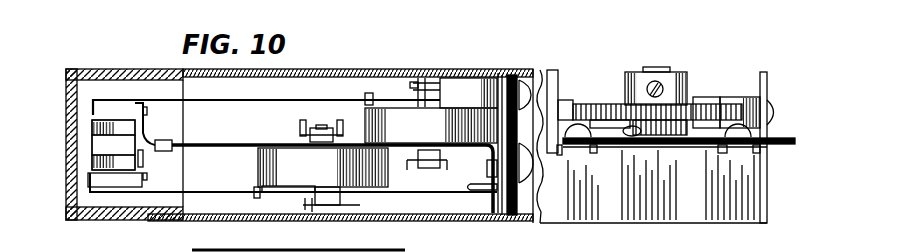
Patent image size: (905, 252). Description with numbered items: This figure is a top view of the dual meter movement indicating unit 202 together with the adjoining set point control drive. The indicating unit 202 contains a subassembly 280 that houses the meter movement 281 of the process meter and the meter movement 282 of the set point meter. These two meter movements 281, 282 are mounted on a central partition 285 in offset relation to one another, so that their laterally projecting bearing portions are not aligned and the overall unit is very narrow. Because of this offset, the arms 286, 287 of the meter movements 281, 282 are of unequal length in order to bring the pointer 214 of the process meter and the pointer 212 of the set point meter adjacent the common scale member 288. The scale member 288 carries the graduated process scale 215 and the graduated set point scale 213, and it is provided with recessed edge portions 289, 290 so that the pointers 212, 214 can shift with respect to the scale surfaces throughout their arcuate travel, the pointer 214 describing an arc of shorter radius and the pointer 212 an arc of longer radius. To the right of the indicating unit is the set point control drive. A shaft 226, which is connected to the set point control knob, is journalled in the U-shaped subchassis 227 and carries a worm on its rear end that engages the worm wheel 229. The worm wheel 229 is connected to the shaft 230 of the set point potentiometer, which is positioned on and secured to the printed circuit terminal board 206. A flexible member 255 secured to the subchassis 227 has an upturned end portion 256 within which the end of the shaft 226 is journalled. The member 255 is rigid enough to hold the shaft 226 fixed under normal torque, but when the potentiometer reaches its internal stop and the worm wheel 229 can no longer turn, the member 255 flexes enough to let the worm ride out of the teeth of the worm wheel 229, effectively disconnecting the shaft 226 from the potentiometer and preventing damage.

The indicating subassembly 202 is at (78, 66).
The subassembly 280 is at (322, 68).
The recessed edge portion 290 is at (86, 114).
The pointer 212 is at (92, 106).
The set point scale 213 is at (92, 125).
The scale member 288 is at (92, 140).
The process scale 215 is at (92, 162).
The pointer 214 is at (86, 178).
The recessed edge portion 289 is at (108, 180).
The arm 287 is at (262, 95).
The central partition 285 is at (256, 137).
The arm 286 is at (236, 183).
The meter movement 281 is at (360, 186).
The meter movement 282 is at (397, 114).
The shaft 226 is at (567, 100).
The worm wheel 229 is at (578, 102).
The shaft 230 is at (648, 68).
The upturned end portion 256 is at (697, 98).
The flexible member 255 is at (760, 98).
The printed circuit terminal board 206 is at (630, 148).
The subchassis 227 is at (558, 222).